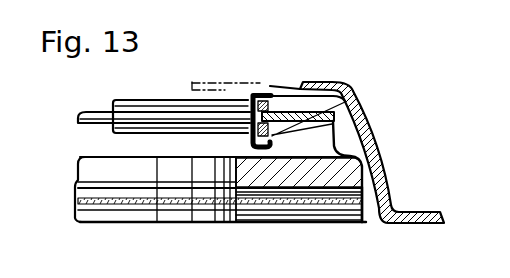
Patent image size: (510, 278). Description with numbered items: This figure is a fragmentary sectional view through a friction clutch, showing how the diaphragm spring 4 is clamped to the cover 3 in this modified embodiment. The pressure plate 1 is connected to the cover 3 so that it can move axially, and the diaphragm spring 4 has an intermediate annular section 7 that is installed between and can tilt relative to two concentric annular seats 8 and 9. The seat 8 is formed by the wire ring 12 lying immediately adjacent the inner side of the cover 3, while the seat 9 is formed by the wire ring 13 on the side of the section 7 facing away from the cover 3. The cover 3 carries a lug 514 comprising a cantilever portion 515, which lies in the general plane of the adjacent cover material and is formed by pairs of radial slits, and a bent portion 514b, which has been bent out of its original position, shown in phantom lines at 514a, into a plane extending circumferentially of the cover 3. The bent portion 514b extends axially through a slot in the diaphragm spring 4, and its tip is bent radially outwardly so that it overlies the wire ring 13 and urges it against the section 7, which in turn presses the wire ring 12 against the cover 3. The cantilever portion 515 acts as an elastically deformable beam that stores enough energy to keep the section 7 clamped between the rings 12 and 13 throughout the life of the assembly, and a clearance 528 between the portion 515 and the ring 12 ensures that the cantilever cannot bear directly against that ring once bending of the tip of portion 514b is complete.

The pressure plate 1 is at (90, 167).
The cover 3 is at (372, 139).
The diaphragm spring 4 is at (97, 122).
The intermediate annular section 7 is at (343, 90).
The annular seat 8 is at (372, 139).
The wire ring 12 is at (372, 139).
The annular seat 9 is at (372, 152).
The wire ring 13 is at (378, 157).
The lug 514 is at (240, 116).
The original position of bent portion 514a is at (200, 82).
The bent portion 514b is at (265, 126).
The cantilever portion 515 is at (302, 154).
The clearance 528 is at (272, 92).